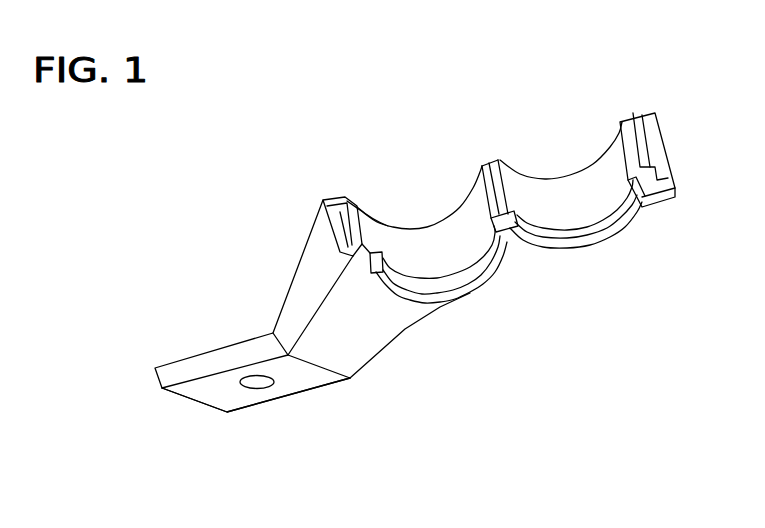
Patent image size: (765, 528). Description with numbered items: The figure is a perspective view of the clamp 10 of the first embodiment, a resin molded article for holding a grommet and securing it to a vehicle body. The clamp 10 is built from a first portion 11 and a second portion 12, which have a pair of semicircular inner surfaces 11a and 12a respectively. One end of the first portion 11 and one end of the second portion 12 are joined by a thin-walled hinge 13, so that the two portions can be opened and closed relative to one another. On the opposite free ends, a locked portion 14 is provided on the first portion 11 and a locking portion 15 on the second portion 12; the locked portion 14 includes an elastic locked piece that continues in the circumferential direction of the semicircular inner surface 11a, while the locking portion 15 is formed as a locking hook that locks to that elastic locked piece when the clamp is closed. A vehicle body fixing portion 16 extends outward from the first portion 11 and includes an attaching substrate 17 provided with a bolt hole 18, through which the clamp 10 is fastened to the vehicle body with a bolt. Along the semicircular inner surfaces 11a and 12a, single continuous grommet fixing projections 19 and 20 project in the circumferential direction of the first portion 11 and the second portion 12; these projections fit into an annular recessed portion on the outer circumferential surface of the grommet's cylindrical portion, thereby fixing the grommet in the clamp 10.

The clamp 10 is at (227, 153).
The first portion 11 is at (480, 294).
The semicircular inner surface 11a is at (435, 241).
The second portion 12 is at (597, 250).
The semicircular inner surface 12a is at (572, 188).
The thin-walled hinge 13 is at (509, 238).
The locked portion 14 is at (343, 199).
The locking portion 15 is at (643, 113).
The vehicle body fixing portion 16 is at (217, 347).
The attaching substrate 17 is at (213, 396).
The bolt hole 18 is at (258, 386).
The grommet fixing projection 19 is at (448, 284).
The grommet fixing projection 20 is at (593, 227).